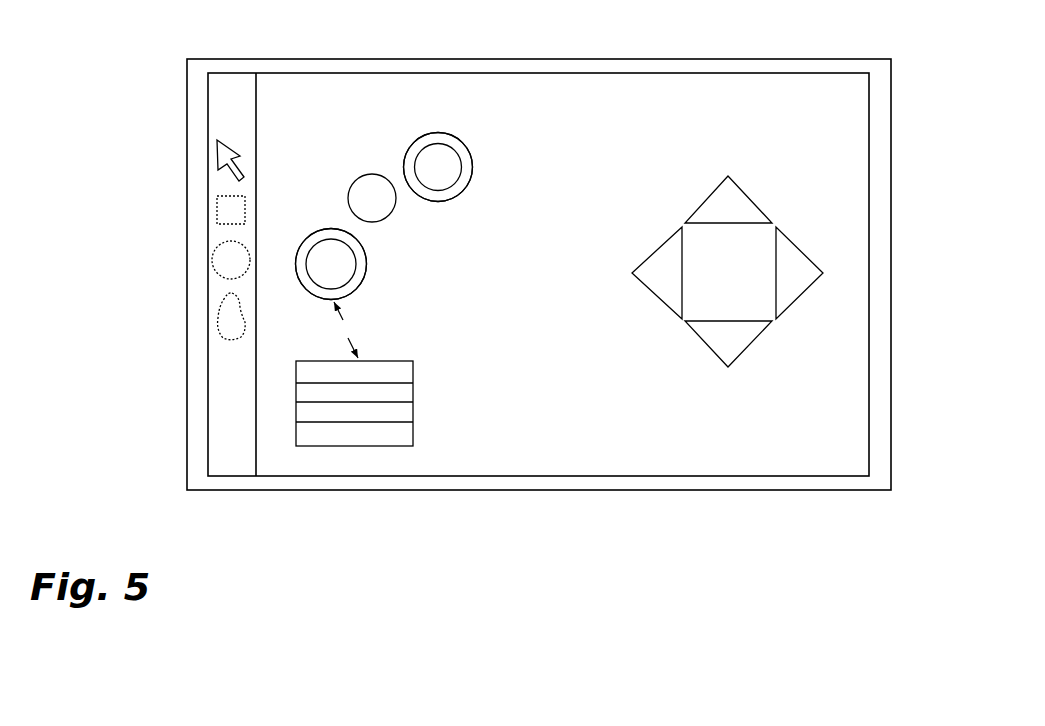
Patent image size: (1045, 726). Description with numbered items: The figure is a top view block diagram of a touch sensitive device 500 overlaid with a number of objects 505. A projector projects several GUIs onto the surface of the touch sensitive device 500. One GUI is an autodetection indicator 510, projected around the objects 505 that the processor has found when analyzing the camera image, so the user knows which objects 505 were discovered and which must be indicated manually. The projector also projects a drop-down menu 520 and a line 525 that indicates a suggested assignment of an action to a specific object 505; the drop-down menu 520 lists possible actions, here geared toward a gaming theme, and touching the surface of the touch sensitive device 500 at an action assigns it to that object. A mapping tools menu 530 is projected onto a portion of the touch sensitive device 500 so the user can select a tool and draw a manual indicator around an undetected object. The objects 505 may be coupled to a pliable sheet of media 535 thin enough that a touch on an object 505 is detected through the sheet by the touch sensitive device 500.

The touch sensitive device 500 is at (198, 275).
The objects 505 is at (438, 167).
The autodetection indicator 510 is at (358, 291).
The drop-down menu 520 is at (295, 407).
The line 525 is at (345, 330).
The mapping tools menu 530 is at (233, 110).
The pliable sheet of media 535 is at (418, 87).